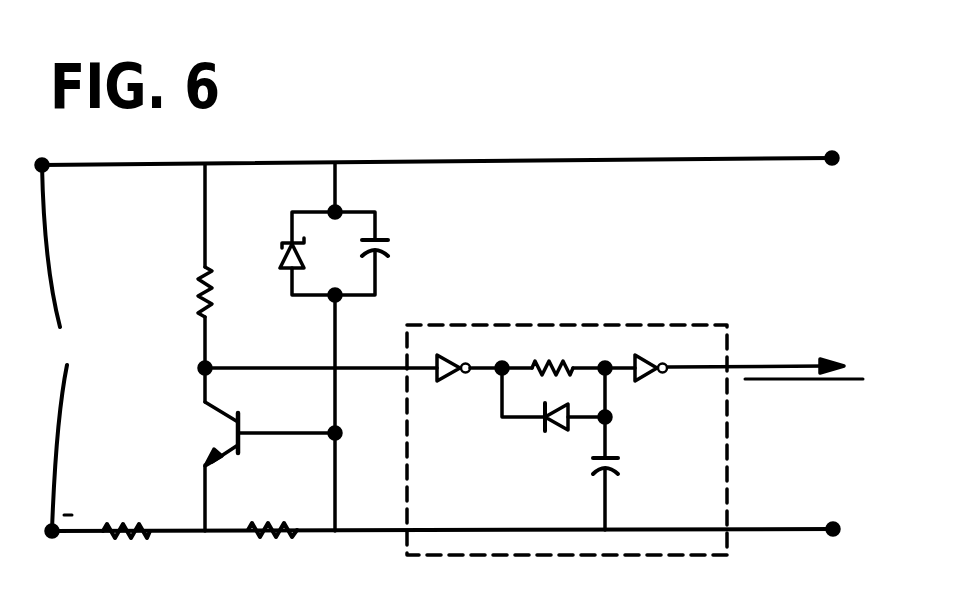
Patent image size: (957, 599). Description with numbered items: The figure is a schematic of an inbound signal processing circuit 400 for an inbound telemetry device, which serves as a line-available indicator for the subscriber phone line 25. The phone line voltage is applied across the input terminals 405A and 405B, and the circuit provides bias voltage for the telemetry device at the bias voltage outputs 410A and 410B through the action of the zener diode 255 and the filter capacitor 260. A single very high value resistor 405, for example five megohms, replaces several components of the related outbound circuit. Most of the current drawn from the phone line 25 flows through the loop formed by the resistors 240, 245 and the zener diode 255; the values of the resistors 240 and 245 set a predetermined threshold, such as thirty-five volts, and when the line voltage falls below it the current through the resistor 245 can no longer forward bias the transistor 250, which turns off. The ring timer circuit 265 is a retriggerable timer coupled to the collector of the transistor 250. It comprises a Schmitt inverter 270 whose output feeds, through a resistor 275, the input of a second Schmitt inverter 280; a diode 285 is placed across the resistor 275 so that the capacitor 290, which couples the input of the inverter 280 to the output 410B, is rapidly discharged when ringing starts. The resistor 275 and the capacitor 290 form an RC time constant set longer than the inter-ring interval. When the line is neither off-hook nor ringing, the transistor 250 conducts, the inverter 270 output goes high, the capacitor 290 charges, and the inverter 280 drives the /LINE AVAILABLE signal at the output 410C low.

The processing circuit 400 is at (506, 108).
The phone line 25 is at (62, 347).
The terminal 405A is at (42, 163).
The terminal 405B is at (54, 534).
The bias voltage output 410A is at (832, 156).
The bias voltage output 410B is at (833, 533).
The /LINE AVAILABLE output 410C is at (815, 361).
The resistor 405 is at (201, 288).
The transistor 250 is at (226, 425).
The zener diode 255 is at (284, 249).
The filter capacitor 260 is at (378, 246).
The resistor 240 is at (143, 537).
The resistor 245 is at (291, 538).
The ring timer circuit 265 is at (508, 320).
The Schmitt inverter 270 is at (452, 358).
The resistor 275 is at (553, 362).
The Schmitt inverter 280 is at (650, 358).
The diode 285 is at (558, 433).
The capacitor 290 is at (612, 457).